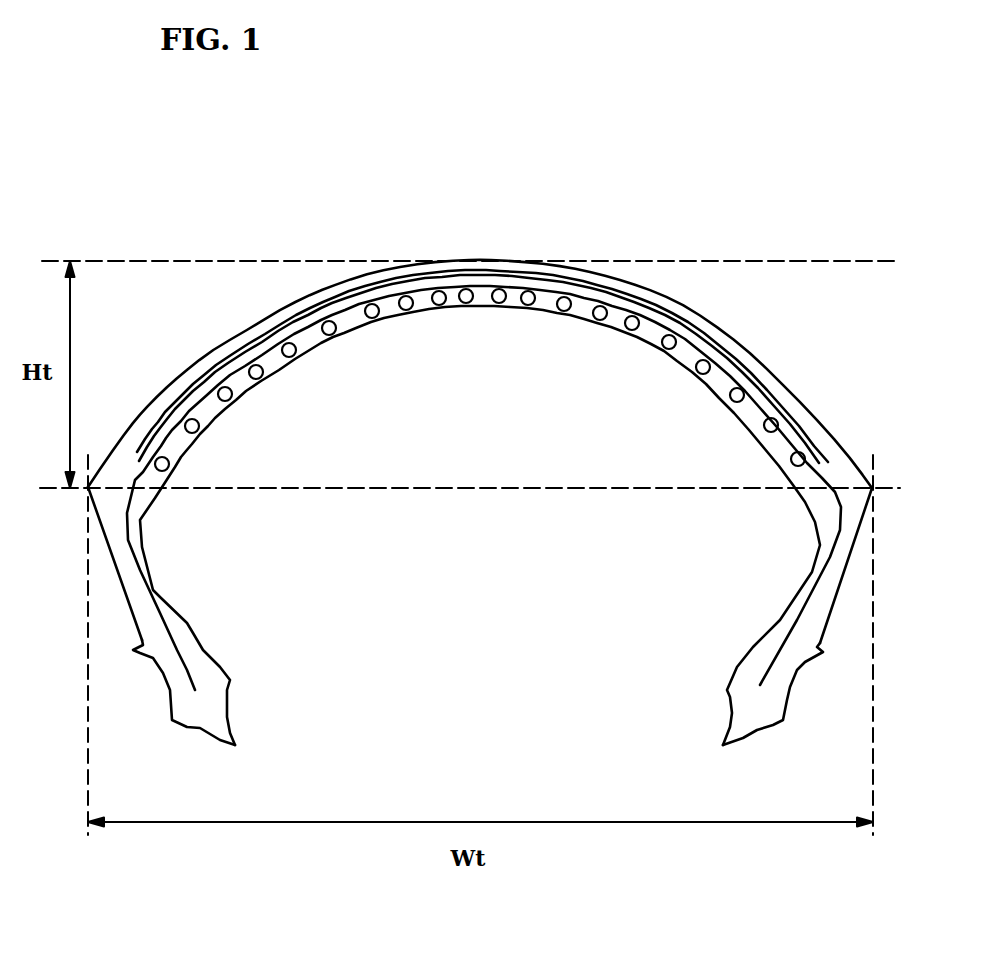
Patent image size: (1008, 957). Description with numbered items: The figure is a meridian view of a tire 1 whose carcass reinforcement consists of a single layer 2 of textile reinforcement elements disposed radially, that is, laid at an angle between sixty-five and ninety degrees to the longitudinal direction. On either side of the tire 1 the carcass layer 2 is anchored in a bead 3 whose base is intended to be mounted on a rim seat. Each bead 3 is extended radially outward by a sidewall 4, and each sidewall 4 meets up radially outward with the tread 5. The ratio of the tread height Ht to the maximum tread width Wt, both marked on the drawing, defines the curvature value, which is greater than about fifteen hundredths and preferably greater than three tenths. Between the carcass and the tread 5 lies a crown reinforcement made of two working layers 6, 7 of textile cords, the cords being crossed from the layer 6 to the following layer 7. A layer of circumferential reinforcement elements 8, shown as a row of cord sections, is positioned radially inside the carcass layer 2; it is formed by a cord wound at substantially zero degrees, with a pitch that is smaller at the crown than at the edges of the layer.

The tire 1 is at (594, 231).
The carcass layer 2 is at (165, 620).
The bead 3 is at (207, 688).
The sidewall 4 is at (128, 597).
The tread 5 is at (333, 280).
The working layer 6 is at (633, 297).
The working layer 7 is at (735, 347).
The layer of circumferential reinforcement elements 8 is at (373, 312).